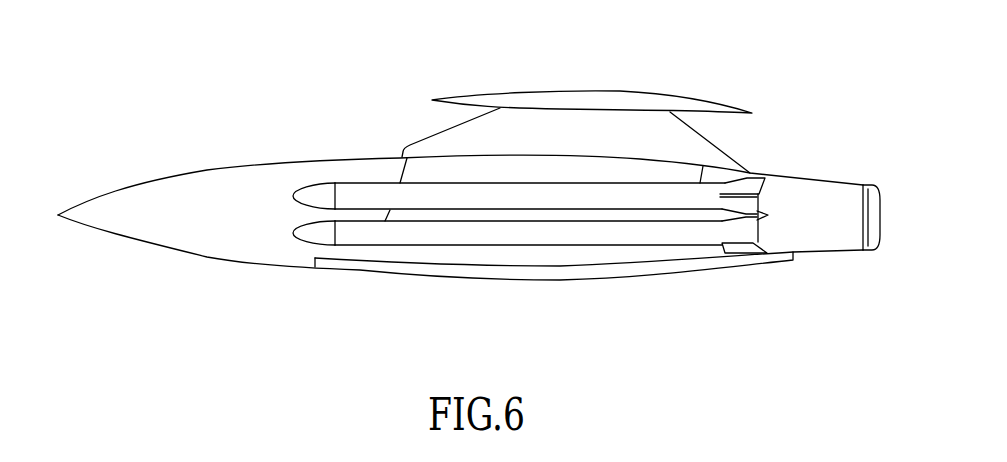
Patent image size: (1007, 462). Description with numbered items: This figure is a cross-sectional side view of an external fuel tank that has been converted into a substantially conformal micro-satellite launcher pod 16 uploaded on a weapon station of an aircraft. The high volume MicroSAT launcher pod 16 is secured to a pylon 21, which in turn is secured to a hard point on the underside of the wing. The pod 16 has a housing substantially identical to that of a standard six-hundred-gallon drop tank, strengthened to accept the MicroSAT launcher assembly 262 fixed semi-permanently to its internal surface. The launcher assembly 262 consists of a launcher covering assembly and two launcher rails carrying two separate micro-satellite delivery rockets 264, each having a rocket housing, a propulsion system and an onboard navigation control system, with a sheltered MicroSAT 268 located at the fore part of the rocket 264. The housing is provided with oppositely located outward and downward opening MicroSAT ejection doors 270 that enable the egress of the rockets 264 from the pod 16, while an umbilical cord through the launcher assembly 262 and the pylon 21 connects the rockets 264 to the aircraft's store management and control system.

The high volume MicroSAT launcher pod 16 is at (223, 264).
The pylon 21 is at (724, 152).
The MicroSAT launcher assembly 262 is at (415, 173).
The micro-satellite delivery rocket 264 is at (765, 197).
The MicroSAT 268 is at (312, 195).
The MicroSAT ejection door 270 is at (557, 276).